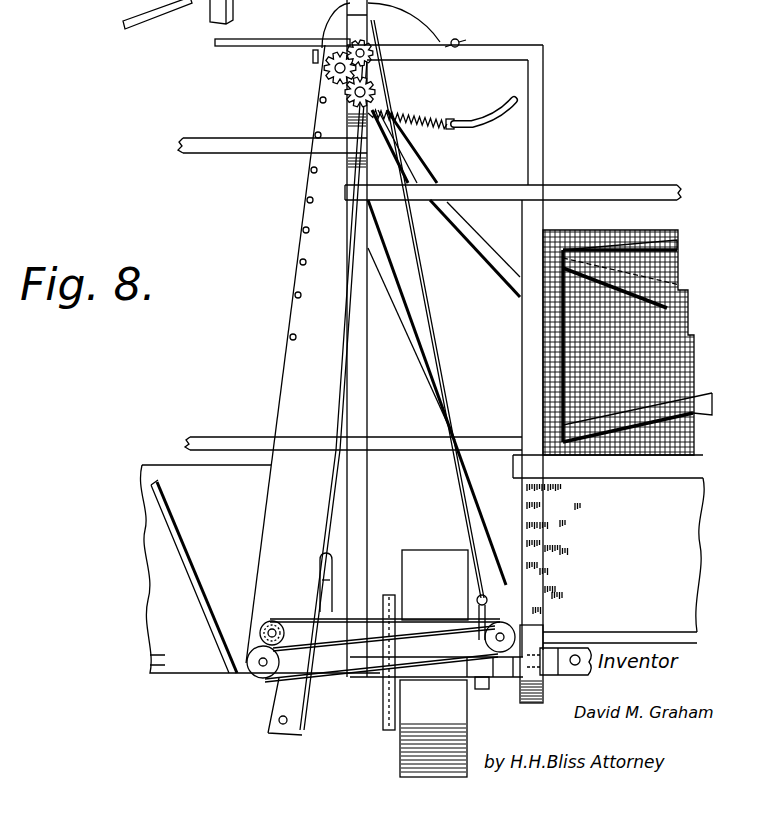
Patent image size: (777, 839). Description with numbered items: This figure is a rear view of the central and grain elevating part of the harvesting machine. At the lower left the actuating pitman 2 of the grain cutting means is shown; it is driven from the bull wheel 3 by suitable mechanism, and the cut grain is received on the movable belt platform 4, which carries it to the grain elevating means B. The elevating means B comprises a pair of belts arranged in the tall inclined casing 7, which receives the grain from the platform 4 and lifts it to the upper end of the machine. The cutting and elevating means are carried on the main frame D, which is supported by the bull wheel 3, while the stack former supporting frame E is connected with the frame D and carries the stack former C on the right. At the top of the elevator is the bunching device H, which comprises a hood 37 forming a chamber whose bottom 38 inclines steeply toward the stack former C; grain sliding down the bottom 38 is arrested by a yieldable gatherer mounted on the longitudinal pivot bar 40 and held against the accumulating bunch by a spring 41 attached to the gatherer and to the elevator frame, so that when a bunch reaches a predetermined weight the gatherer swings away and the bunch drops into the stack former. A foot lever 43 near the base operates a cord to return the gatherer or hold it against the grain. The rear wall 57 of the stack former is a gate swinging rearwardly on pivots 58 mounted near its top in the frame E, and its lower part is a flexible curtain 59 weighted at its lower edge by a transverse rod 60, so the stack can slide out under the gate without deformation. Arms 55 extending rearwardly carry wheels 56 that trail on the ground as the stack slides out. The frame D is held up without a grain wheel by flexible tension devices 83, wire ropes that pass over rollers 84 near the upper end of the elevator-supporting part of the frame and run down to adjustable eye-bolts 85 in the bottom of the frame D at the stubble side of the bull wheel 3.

The actuating pitman 2 is at (151, 18).
The bull wheel 3 is at (434, 663).
The movable belt platform 4 is at (150, 660).
The casing 7 is at (285, 354).
The hood 37 is at (410, 6).
The bottom 38 is at (484, 244).
The longitudinal pivot bar 40 is at (458, 40).
The springs 41 is at (441, 109).
The foot lever 43 is at (320, 563).
The arms 55 is at (560, 676).
The wheels 56 is at (528, 704).
The rear wall 57 is at (665, 336).
The pivots 58 is at (553, 228).
The flexible curtain 59 is at (608, 543).
The transverse rod 60 is at (630, 631).
The flexible tension devices 83 is at (291, 46).
The rollers 84 is at (372, 32).
The eye-bolts 85 is at (477, 606).
The grain elevating means B is at (307, 369).
The stack former C is at (626, 342).
The main frame D is at (260, 583).
The stack former supporting frame E is at (522, 329).
The bunching device H is at (445, 122).